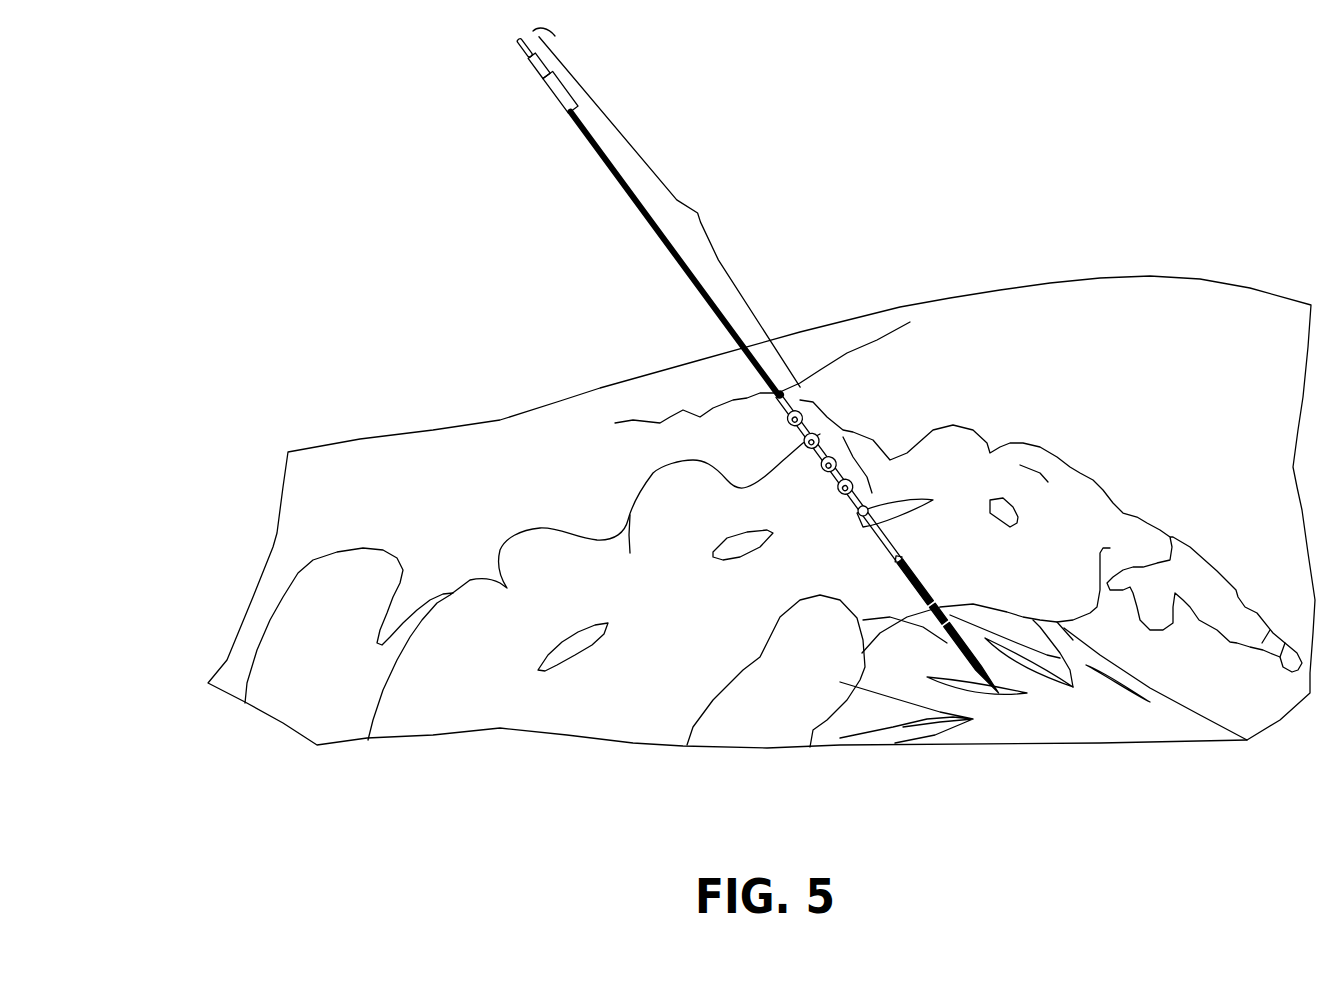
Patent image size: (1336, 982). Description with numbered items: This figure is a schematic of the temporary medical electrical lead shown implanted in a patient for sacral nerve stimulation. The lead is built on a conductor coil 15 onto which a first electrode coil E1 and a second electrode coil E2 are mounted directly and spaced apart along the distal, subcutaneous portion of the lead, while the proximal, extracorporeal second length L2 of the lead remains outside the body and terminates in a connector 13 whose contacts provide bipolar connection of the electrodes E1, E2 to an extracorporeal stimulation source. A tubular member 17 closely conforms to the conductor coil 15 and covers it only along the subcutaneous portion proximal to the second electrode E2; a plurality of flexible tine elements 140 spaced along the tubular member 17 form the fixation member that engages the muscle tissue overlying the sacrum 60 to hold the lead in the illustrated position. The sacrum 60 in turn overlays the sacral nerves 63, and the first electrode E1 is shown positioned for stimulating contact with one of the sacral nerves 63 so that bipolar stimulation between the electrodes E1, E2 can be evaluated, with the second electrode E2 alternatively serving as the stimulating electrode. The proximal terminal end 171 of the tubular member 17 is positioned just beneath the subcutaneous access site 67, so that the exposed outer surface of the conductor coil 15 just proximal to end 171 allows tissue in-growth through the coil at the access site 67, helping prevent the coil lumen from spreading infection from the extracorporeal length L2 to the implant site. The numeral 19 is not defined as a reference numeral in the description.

The connector 13 is at (739, 408).
The conductor coil 15 is at (625, 188).
The second length L2 is at (675, 206).
The subcutaneous access site 67 is at (775, 396).
The proximal terminal end 171 is at (800, 377).
The tubular member 17 is at (760, 396).
The tine elements 140 is at (855, 419).
The sacrum 60 is at (690, 495).
The second electrode coil E2 is at (897, 590).
The first electrode coil E1 is at (940, 657).
The target tissue 19 is at (950, 645).
The sacral nerves 63 is at (1055, 715).